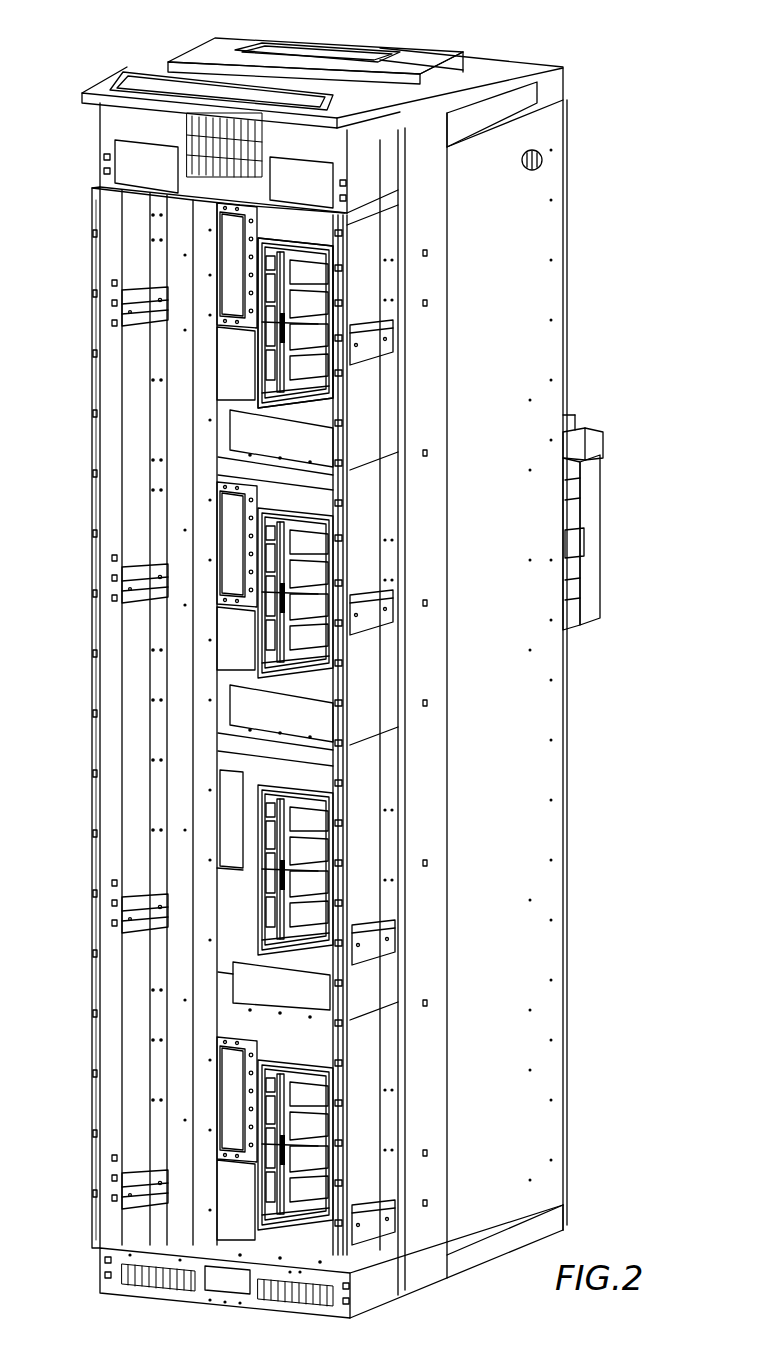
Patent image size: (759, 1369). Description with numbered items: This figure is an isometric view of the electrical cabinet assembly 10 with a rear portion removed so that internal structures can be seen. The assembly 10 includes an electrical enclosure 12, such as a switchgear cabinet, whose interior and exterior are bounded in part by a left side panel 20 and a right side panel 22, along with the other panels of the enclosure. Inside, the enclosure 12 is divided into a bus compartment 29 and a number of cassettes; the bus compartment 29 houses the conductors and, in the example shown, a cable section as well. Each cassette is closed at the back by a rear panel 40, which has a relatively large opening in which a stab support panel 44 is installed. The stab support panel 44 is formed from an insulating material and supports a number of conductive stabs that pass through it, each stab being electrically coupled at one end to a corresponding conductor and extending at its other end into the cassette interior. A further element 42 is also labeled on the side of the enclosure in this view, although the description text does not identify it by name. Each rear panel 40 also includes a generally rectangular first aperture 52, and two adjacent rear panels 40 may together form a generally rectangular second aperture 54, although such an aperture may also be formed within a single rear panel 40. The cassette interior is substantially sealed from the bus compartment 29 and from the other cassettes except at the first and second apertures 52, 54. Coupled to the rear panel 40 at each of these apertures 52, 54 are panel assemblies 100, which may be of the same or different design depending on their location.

The electrical cabinet assembly 10 is at (576, 88).
The electrical enclosure 12 is at (427, 198).
The left side panel 20 is at (540, 1050).
The right side panel 22 is at (92, 1173).
The bus compartment 29 is at (177, 1228).
The rear panel 40 is at (233, 352).
The side-mounted device 42 is at (585, 530).
The stab support panel 44 is at (320, 858).
The first aperture 52 is at (230, 800).
The second aperture 54 is at (310, 990).
The panel assembly 100 is at (150, 80).